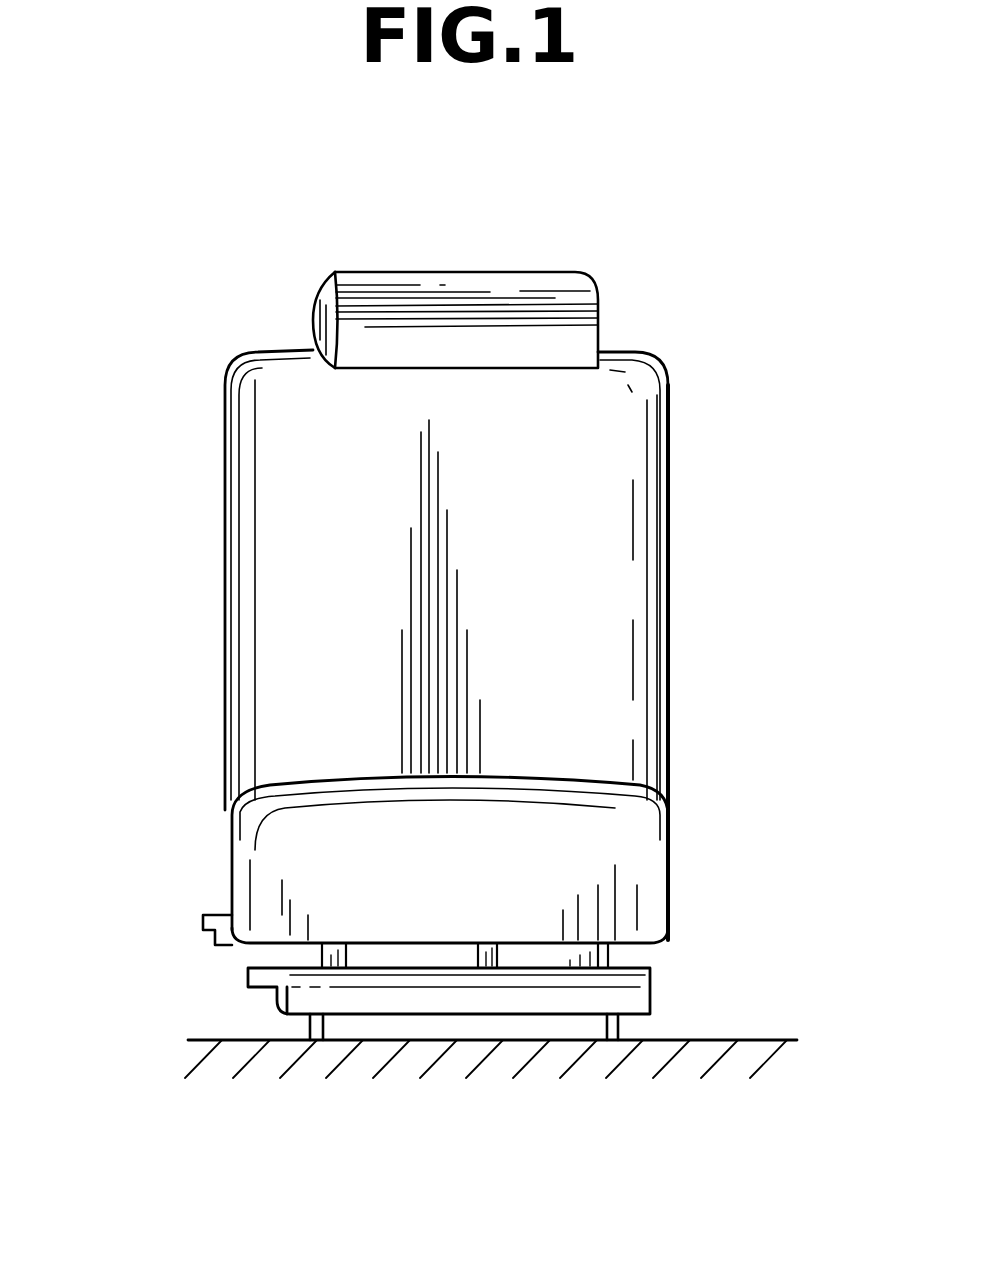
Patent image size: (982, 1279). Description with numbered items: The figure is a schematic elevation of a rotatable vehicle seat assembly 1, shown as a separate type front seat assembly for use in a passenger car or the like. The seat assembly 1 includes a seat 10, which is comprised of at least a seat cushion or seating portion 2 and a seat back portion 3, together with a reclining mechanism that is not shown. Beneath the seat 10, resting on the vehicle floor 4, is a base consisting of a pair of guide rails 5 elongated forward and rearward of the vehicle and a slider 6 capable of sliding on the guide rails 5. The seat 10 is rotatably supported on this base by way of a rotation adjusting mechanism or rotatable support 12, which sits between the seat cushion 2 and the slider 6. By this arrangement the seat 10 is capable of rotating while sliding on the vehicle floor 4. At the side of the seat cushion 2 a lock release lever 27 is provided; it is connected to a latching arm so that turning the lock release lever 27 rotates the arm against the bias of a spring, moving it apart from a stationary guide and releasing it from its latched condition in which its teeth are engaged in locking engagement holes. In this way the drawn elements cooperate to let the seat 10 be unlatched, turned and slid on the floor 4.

The rotatable vehicle seat assembly 1 is at (166, 513).
The seat 10 is at (770, 660).
The seat back portion 3 is at (640, 692).
The seat cushion 2 is at (640, 862).
The lock release lever 27 is at (204, 928).
The rotatable support 12 is at (455, 955).
The slider 6 is at (637, 996).
The guide rails 5 is at (325, 1020).
The vehicle floor 4 is at (780, 1040).